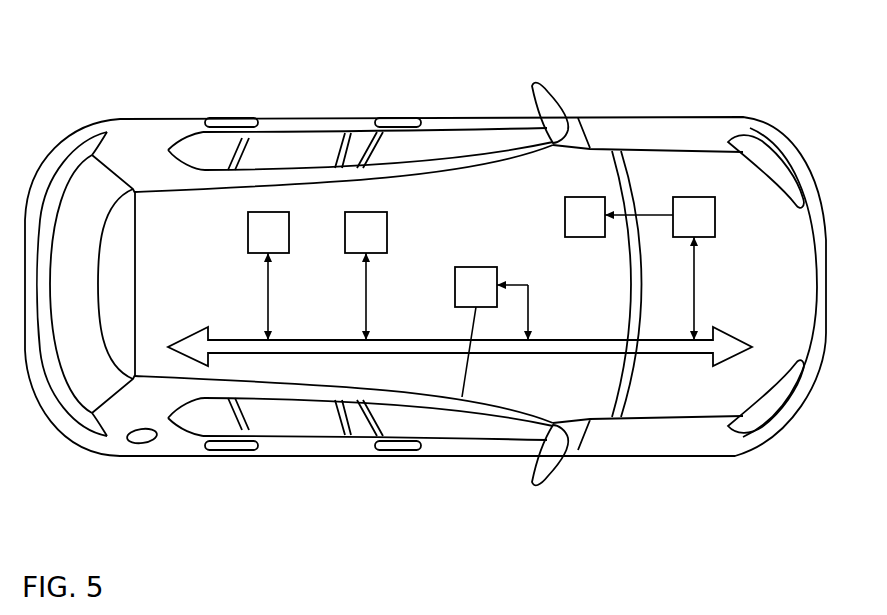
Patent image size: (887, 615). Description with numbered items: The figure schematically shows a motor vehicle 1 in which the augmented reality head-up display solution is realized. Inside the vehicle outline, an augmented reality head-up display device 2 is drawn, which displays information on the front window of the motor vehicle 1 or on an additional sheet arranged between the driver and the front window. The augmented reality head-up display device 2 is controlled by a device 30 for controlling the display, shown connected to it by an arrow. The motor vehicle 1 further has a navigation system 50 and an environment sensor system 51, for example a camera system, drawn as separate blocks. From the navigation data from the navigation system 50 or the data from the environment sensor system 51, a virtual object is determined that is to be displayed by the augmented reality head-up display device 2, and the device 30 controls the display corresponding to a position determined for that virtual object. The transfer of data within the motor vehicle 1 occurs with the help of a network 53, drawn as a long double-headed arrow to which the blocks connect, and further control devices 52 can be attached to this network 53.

The motor vehicle 1 is at (695, 117).
The augmented reality head-up display device 2 is at (585, 197).
The device for controlling the display 30 is at (715, 207).
The navigation system 50 is at (365, 212).
The environment sensor system 51 is at (467, 267).
The further control devices 52 is at (268, 212).
The network 53 is at (295, 353).